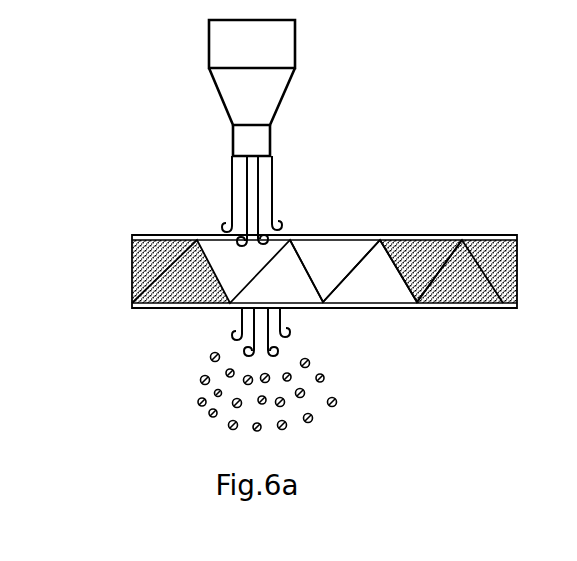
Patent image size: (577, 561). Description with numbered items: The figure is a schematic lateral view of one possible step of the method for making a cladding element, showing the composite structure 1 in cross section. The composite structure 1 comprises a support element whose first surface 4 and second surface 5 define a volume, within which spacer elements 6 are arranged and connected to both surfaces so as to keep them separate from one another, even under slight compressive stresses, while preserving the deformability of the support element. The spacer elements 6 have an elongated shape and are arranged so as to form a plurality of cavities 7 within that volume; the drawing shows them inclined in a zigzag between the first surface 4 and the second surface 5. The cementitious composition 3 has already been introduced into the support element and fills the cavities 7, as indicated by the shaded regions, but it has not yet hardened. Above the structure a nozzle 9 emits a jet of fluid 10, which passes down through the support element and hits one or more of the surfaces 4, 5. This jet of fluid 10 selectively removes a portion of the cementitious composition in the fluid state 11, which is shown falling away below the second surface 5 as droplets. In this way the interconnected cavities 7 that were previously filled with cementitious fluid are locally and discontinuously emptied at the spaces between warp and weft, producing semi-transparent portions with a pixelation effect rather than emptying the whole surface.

The composite structure 1 is at (115, 245).
The cementitious composition 3 is at (467, 283).
The first surface 4 is at (142, 233).
The second surface 5 is at (167, 314).
The spacer elements 6 is at (395, 260).
The cavities 7 is at (329, 267).
The nozzle 9 is at (207, 90).
The jet of fluid 10 is at (225, 188).
The cementitious composition in the fluid state 11 is at (192, 403).